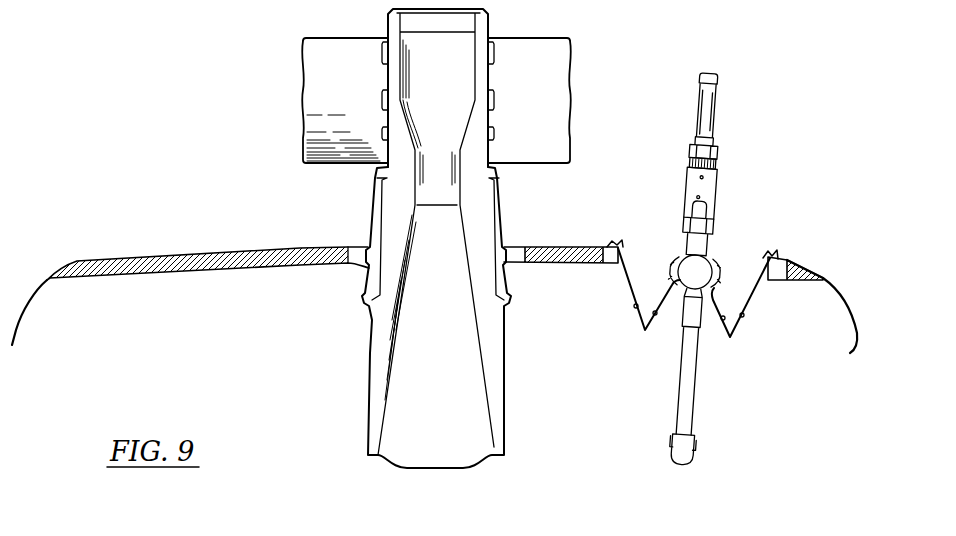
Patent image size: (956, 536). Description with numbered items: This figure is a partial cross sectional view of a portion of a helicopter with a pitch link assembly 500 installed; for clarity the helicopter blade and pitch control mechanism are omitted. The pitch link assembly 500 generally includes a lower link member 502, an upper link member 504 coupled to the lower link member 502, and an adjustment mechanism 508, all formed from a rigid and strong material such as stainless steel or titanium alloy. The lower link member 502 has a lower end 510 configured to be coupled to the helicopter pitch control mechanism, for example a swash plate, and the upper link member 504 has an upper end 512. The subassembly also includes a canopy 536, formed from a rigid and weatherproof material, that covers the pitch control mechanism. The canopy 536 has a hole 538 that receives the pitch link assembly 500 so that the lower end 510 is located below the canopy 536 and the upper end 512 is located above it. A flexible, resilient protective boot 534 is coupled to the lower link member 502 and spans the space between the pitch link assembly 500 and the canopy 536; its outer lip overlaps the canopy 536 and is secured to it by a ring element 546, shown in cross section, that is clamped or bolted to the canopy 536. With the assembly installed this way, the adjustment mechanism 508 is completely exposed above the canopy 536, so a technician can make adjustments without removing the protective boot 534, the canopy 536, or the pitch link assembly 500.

The pitch link assembly 500 is at (705, 286).
The lower link member 502 is at (680, 400).
The upper link member 504 is at (697, 118).
The adjustment mechanism 508 is at (717, 187).
The lower end 510 is at (687, 459).
The upper end 512 is at (703, 66).
The protective boot 534 is at (631, 290).
The canopy 536 is at (163, 257).
The hole 538 is at (643, 258).
The ring element 546 is at (617, 243).